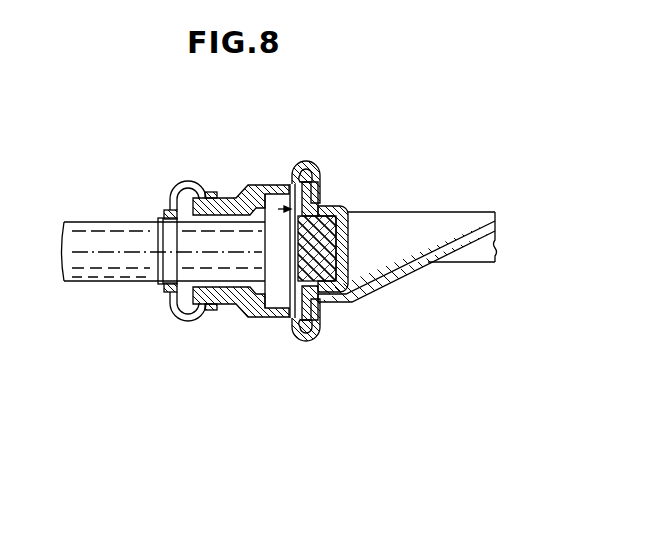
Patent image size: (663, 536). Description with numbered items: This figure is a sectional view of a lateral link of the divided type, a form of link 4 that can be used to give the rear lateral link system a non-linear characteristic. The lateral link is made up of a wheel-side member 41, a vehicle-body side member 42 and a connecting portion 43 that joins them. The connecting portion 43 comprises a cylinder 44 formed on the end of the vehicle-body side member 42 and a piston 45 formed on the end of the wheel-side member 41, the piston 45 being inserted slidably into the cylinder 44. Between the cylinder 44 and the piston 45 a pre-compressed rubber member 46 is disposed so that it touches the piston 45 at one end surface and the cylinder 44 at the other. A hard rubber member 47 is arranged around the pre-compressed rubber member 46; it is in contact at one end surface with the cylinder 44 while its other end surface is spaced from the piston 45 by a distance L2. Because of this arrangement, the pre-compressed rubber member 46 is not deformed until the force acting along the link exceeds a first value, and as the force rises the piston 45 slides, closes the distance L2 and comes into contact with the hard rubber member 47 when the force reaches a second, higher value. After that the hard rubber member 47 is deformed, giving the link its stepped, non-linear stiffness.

The pipe connector assembly 4 is at (274, 272).
The wheel-side member 41 is at (95, 272).
The vehicle-body side member 42 is at (428, 245).
The connecting portion 43 is at (260, 323).
The cylinder 44 is at (293, 320).
The piston 45 is at (230, 300).
The pre-compressed rubber member 46 is at (316, 240).
The hard rubber member 47 is at (316, 184).
The distance L2 is at (280, 206).